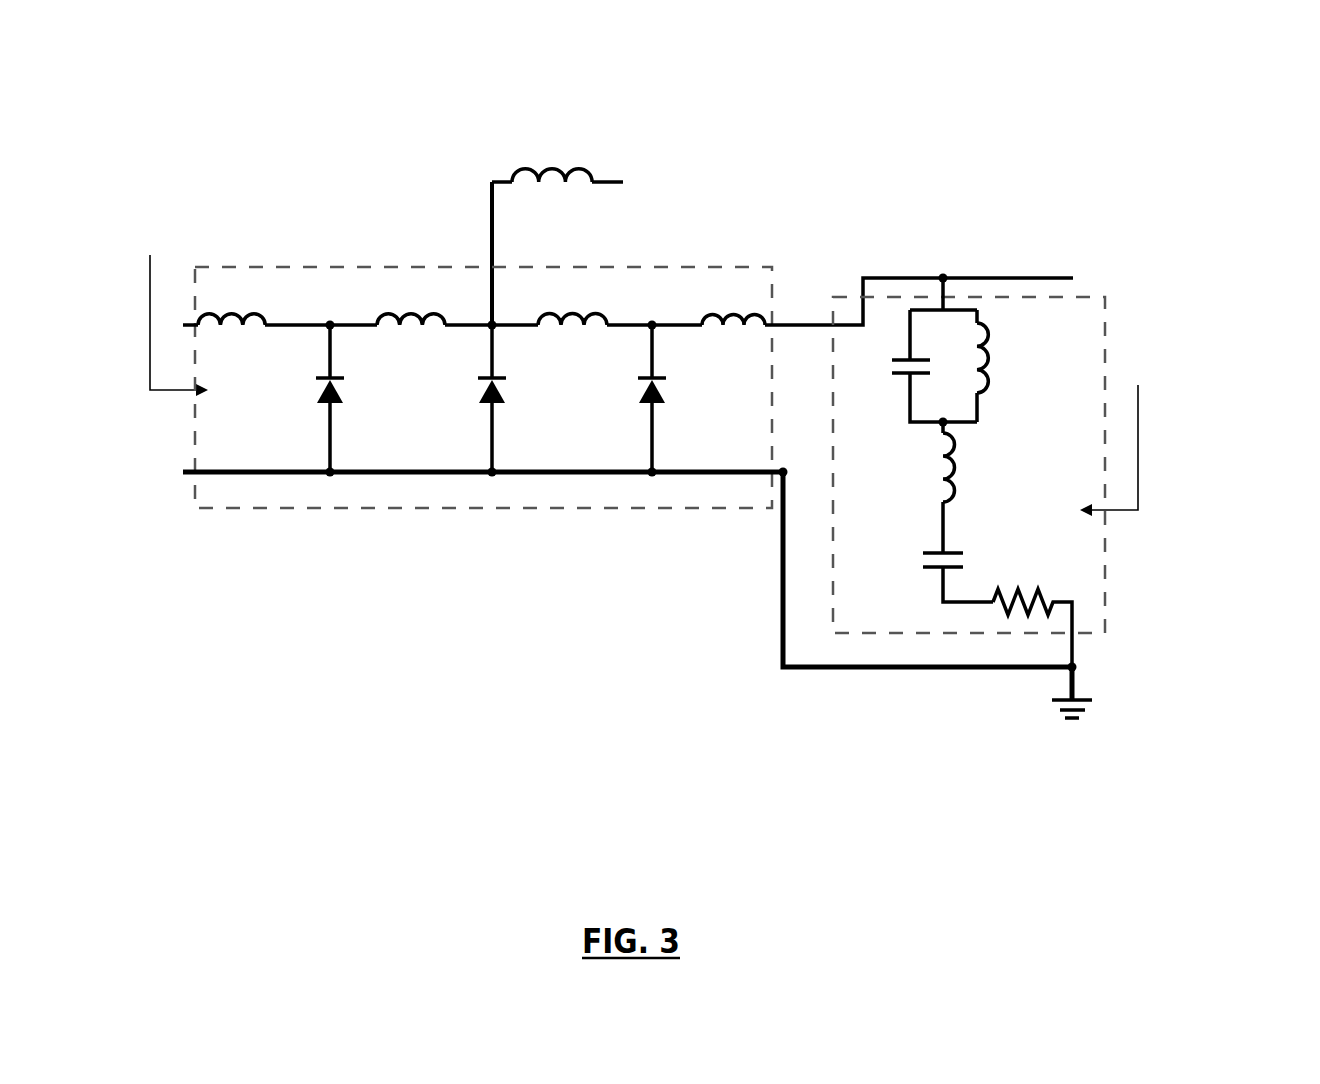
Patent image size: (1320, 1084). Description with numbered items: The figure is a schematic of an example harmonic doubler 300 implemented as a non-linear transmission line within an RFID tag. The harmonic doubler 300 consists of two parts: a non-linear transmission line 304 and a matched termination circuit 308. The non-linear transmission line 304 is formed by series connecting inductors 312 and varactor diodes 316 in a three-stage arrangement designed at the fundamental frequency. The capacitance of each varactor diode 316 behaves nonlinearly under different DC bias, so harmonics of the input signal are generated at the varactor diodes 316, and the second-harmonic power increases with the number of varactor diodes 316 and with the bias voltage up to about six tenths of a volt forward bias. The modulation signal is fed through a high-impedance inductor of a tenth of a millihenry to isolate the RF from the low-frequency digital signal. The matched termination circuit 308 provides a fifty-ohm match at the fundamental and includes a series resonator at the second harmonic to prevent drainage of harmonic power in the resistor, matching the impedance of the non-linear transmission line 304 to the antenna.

The harmonic doubler 300 is at (272, 71).
The non-linear transmission line 304 is at (428, 508).
The matched termination circuit 308 is at (1105, 572).
The inductor 312 is at (260, 316).
The varactor diode 316 is at (327, 403).